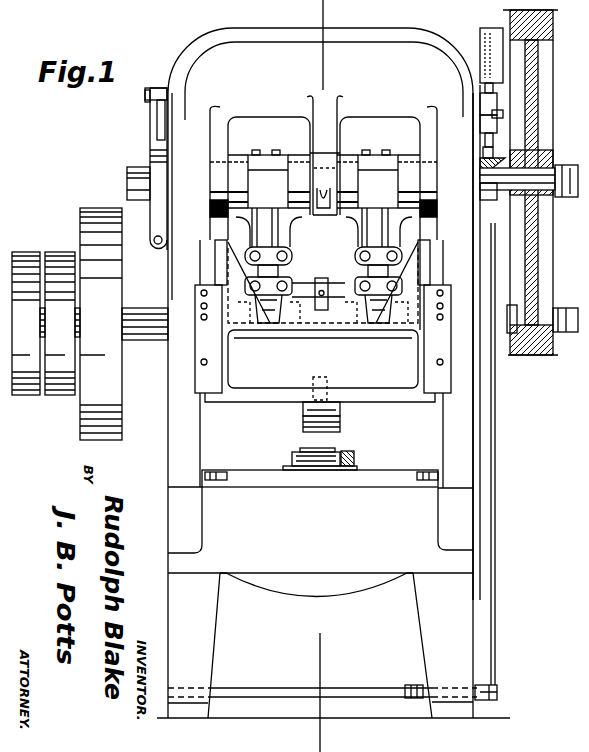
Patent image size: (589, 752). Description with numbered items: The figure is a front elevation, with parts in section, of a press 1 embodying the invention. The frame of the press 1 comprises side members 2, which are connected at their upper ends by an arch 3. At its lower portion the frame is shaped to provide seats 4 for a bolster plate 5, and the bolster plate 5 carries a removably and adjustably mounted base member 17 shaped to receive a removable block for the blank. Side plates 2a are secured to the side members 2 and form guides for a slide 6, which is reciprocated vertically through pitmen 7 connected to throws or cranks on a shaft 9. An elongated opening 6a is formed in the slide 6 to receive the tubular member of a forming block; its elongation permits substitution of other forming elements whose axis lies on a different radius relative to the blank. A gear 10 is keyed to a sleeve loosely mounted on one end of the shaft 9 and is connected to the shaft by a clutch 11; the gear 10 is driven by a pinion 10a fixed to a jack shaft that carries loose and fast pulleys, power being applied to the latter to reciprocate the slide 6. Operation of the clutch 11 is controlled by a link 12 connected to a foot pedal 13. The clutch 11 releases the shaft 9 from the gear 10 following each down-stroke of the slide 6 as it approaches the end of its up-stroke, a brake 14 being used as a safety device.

The press 1 is at (309, 582).
The side members 2 is at (507, 427).
The side plates 2a is at (198, 352).
The arch 3 is at (413, 38).
The seats 4 is at (422, 488).
The bolster plate 5 is at (243, 477).
The slide 6 is at (420, 270).
The opening 6a is at (322, 393).
The pitmen 7 is at (284, 258).
The shaft 9 is at (135, 165).
The gear 10 is at (543, 101).
The pinion 10a is at (143, 313).
The clutch 11 is at (492, 207).
The link 12 is at (505, 456).
The foot pedal 13 is at (415, 685).
The brake 14 is at (148, 153).
The base member 17 is at (356, 458).